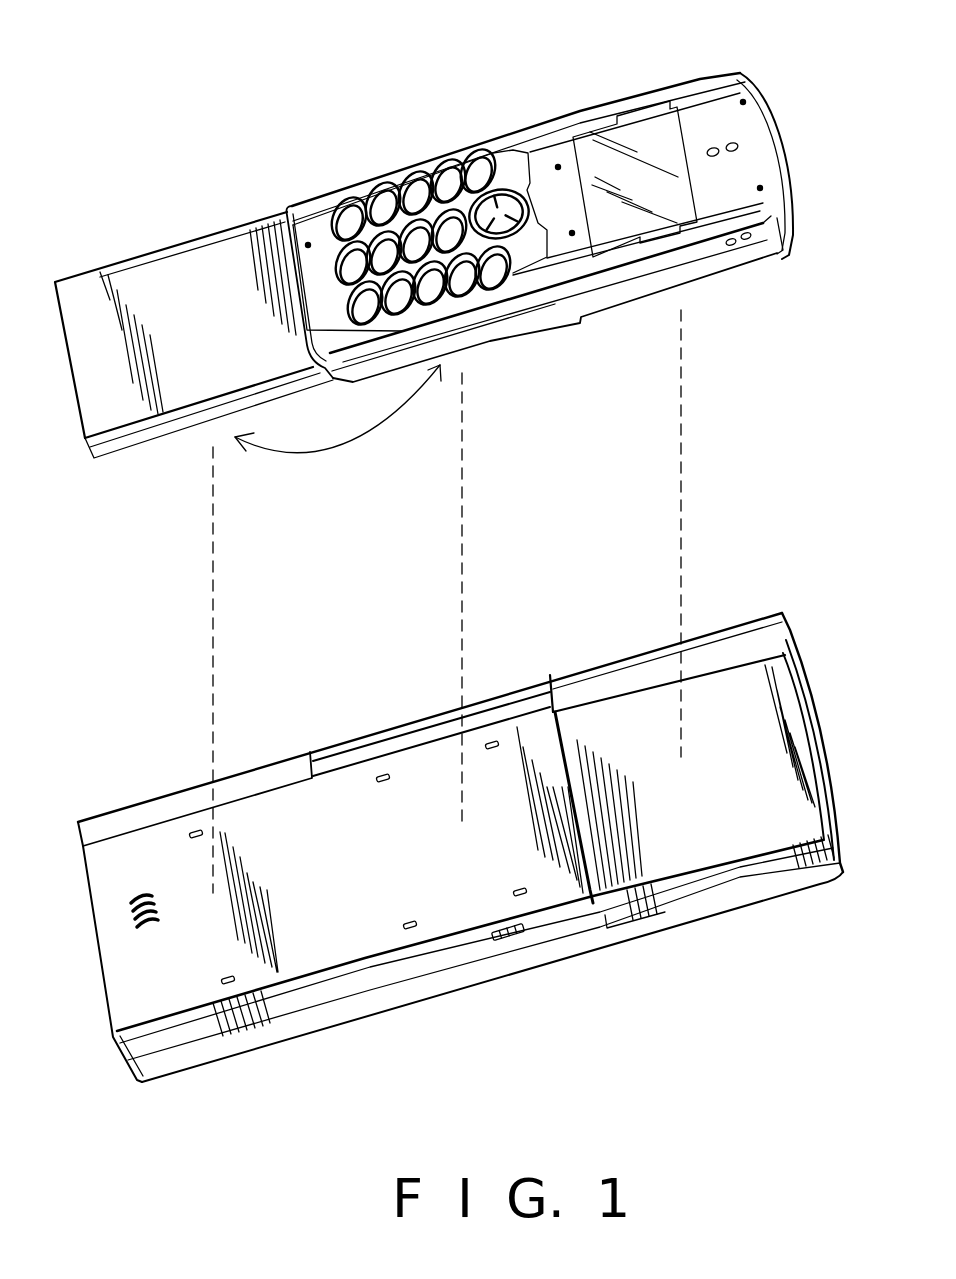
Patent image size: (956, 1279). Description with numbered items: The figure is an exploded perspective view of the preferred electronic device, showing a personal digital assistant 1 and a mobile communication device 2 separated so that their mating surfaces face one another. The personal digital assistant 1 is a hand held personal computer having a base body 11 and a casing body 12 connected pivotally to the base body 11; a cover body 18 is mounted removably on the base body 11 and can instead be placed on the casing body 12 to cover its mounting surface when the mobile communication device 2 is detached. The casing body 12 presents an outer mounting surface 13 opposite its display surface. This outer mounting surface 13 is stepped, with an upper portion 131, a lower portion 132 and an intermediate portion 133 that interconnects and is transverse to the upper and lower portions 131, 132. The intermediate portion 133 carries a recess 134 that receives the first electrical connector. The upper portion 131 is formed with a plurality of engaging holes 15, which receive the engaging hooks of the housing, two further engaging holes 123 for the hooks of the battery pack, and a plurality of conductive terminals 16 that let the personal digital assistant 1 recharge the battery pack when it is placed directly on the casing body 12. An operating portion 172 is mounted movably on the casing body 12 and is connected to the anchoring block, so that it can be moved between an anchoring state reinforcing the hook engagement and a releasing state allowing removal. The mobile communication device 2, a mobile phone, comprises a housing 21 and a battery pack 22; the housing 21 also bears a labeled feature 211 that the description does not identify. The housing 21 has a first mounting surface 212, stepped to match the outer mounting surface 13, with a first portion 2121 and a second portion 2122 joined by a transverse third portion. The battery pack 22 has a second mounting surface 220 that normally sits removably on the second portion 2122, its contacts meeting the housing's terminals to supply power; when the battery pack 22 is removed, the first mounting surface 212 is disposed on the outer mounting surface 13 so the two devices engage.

The personal digital assistant 1 is at (592, 974).
The base body 11 is at (395, 996).
The casing body 12 is at (273, 1000).
The outer mounting surface 13 is at (282, 827).
The upper portion 131 is at (350, 855).
The lower portion 132 is at (637, 780).
The intermediate portion 133 is at (565, 720).
The recess 134 is at (580, 808).
The engaging holes 15 is at (490, 740).
The conductive terminals 16 is at (133, 897).
The engaging holes 123 is at (225, 978).
The operating portion 172 is at (506, 934).
The cover body 18 is at (712, 902).
The mobile communication device 2 is at (323, 127).
The housing 21 is at (767, 93).
The keypad portion 211 is at (545, 158).
The first mounting surface 212 is at (712, 287).
The first portion 2121 is at (638, 306).
The second portion 2122 is at (490, 342).
The battery pack 22 is at (117, 263).
The second mounting surface 220 is at (174, 438).